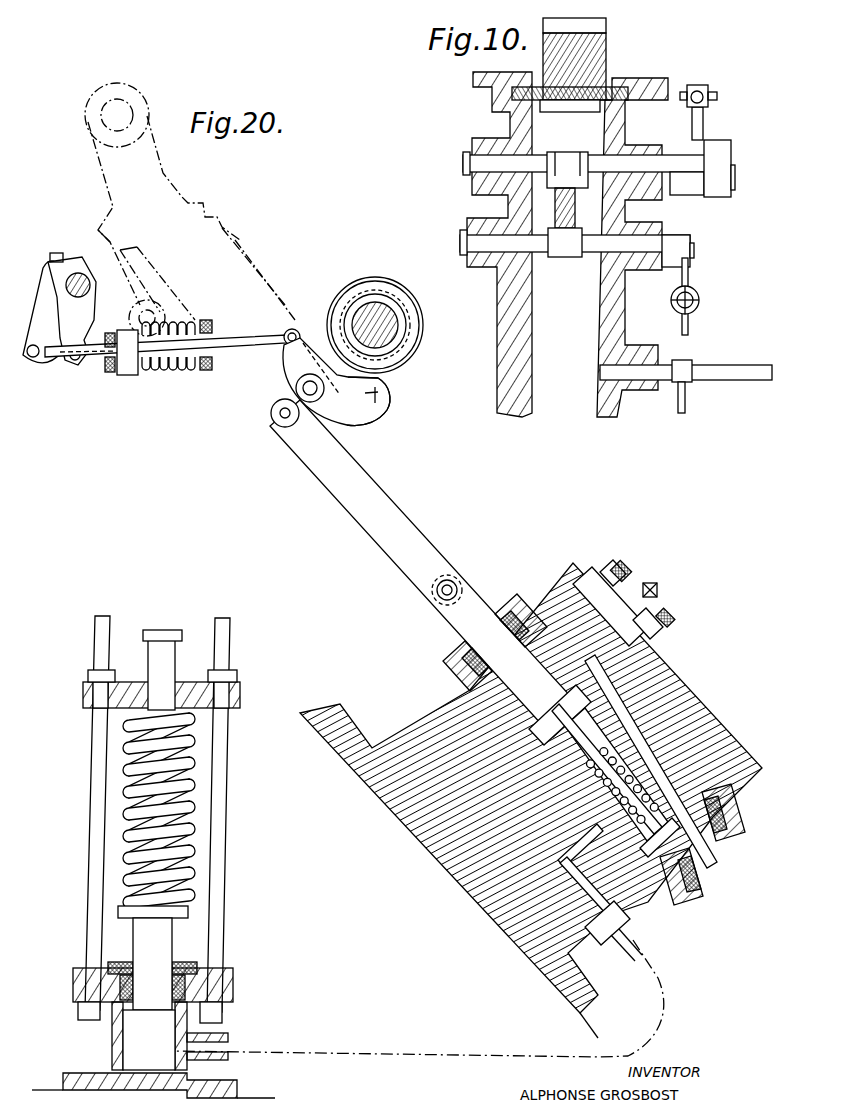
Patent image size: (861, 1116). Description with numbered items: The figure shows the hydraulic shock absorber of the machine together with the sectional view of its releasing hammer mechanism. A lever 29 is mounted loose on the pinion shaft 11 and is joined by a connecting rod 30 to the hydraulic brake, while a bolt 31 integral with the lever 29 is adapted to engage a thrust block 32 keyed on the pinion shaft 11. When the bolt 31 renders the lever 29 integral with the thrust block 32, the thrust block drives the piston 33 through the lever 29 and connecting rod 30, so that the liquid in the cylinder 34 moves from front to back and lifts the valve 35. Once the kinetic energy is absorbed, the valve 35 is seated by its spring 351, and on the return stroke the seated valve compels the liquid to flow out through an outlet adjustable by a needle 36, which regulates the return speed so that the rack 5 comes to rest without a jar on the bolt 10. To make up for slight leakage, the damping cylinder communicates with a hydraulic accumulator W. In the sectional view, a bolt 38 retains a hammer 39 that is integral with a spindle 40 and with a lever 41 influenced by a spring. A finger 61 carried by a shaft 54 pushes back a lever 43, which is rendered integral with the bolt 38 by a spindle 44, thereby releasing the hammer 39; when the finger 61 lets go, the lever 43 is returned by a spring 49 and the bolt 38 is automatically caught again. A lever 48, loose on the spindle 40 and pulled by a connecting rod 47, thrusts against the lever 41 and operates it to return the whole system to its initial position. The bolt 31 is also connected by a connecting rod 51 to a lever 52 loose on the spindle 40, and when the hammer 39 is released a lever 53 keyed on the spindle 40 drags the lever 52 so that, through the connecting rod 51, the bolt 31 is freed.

In FIG. 10, the hammer 39 is at (563, 158).
In FIG. 10, the connecting rod 47 is at (710, 95).
In FIG. 10, the lever 48 is at (703, 127).
In FIG. 10, the lever 41 is at (716, 160).
In FIG. 10, the spindle 40 is at (678, 178).
In FIG. 20, the spindle 40 is at (87, 258).
In FIG. 10, the bolt 38 is at (558, 250).
In FIG. 10, the spindle 44 is at (595, 246).
In FIG. 10, the spring 49 is at (698, 291).
In FIG. 10, the lever 43 is at (690, 327).
In FIG. 10, the shaft 54 is at (743, 365).
In FIG. 10, the finger 61 is at (686, 402).
In FIG. 20, the rack 5 is at (190, 201).
In FIG. 20, the bolt 10 is at (138, 285).
In FIG. 20, the lever 53 is at (38, 308).
In FIG. 20, the lever 52 is at (78, 328).
In FIG. 20, the connecting rod 51 is at (244, 340).
In FIG. 20, the lever 29 is at (322, 353).
In FIG. 20, the pinion shaft 11 is at (372, 303).
In FIG. 20, the thrust block 32 is at (364, 392).
In FIG. 20, the bolt 31 is at (365, 412).
In FIG. 20, the connecting rod 30 is at (348, 482).
In FIG. 20, the needle 36 is at (652, 583).
In FIG. 20, the cylinder 34 is at (668, 710).
In FIG. 20, the piston 33 is at (540, 705).
In FIG. 20, the valve 35 is at (533, 778).
In FIG. 20, the spring 351 is at (577, 810).
In FIG. 20, the hydraulic accumulator W is at (200, 852).